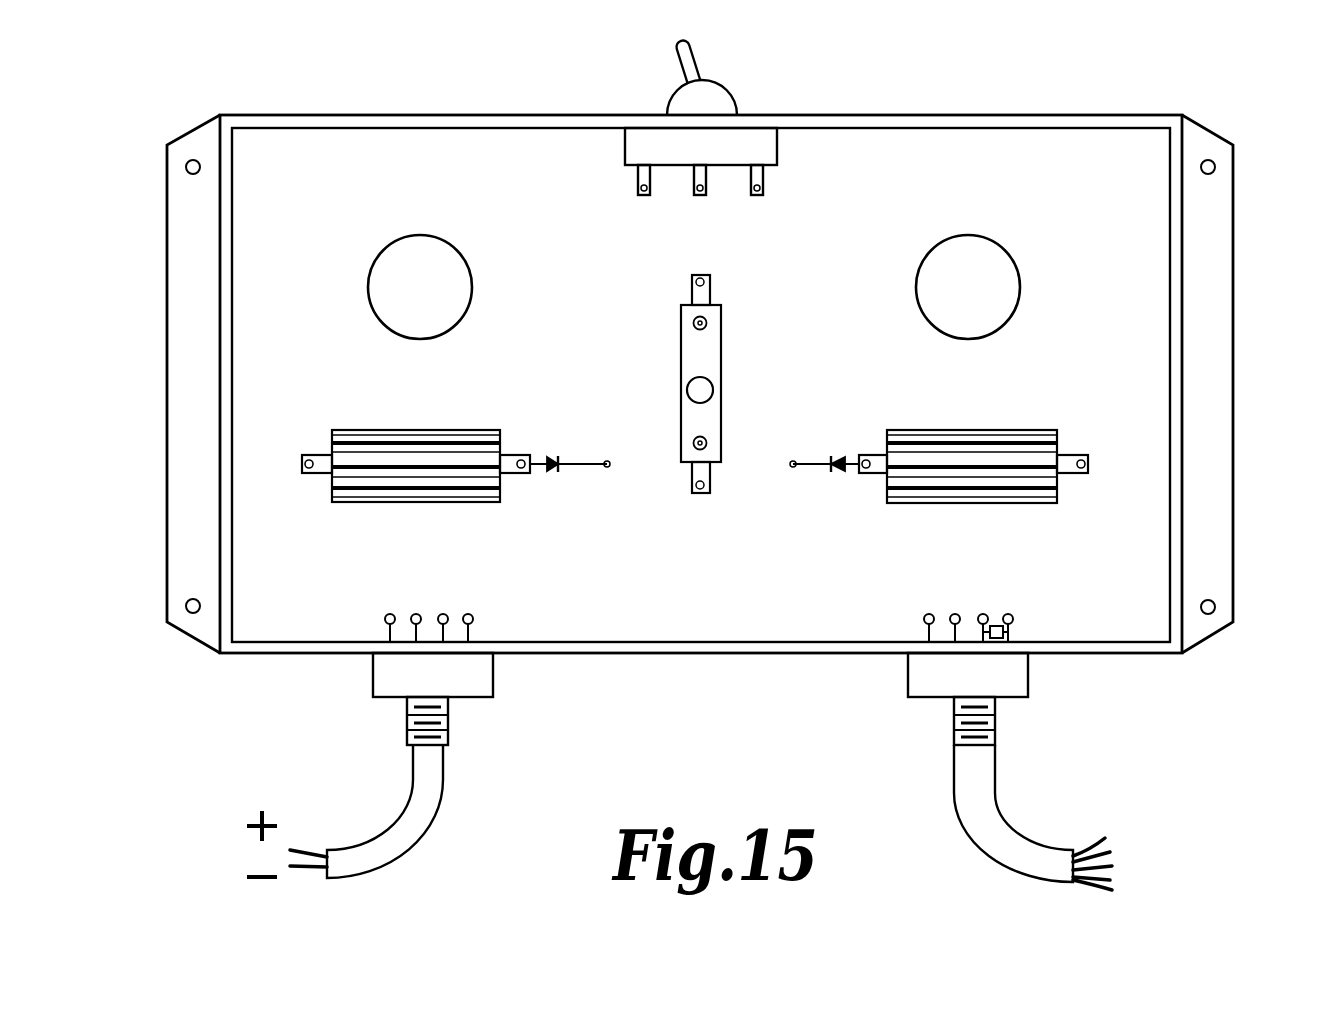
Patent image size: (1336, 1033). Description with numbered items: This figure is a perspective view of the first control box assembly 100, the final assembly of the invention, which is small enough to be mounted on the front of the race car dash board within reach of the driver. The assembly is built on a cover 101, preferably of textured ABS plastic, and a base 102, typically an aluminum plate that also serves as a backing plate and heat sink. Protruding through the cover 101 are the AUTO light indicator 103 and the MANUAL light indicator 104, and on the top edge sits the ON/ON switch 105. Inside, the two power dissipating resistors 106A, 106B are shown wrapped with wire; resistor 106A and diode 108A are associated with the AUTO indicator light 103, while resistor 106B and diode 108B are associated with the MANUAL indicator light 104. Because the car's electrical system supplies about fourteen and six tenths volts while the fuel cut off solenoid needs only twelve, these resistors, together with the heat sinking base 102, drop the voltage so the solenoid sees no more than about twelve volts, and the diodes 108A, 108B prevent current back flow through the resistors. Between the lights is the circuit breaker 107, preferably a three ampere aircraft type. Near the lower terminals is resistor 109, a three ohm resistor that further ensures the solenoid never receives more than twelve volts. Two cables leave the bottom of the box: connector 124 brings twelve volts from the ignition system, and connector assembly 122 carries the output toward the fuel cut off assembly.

The first control box assembly 100 is at (1237, 245).
The cover 101 is at (1205, 335).
The base 102 is at (1233, 458).
The AUTO light indicator 103 is at (428, 232).
The MANUAL light indicator 104 is at (972, 233).
The ON/ON switch 105 is at (723, 87).
The power dissipating resistor 106A is at (407, 512).
The power dissipating resistor 106B is at (985, 507).
The circuit breaker 107 is at (723, 305).
The diode 108A is at (550, 457).
The diode 108B is at (840, 443).
The resistor 109 is at (997, 624).
The connector assembly 122 is at (1010, 813).
The connector 124 is at (440, 800).